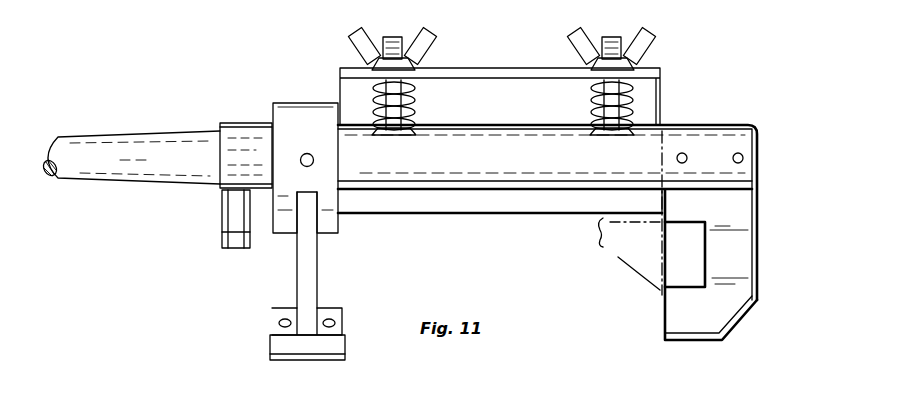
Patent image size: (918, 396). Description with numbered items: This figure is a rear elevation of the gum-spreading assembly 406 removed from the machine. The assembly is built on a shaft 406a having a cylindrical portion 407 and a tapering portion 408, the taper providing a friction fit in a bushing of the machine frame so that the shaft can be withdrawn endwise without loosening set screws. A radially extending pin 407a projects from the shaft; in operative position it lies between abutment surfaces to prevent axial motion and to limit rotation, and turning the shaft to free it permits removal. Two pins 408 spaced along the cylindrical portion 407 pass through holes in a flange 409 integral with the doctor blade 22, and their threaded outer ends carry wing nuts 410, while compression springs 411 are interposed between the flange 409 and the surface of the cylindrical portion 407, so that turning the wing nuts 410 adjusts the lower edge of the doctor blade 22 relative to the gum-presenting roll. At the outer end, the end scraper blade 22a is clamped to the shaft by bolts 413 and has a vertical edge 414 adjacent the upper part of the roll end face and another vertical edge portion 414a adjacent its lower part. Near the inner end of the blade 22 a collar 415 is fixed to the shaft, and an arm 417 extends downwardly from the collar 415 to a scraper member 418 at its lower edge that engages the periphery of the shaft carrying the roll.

The tapering portion / pins 408 is at (103, 143).
The gum-spreading assembly 406 is at (355, 12).
The shaft 406a is at (250, 121).
The collar 415 is at (315, 115).
The arm 417 is at (313, 279).
The scraper member 418 is at (343, 341).
The radially extending pin 407a is at (237, 250).
The flange 409 is at (535, 53).
The wing nuts 410 is at (430, 49).
The compression springs 411 is at (413, 115).
The doctor blade 22 is at (655, 100).
The bolts 413 is at (741, 152).
The cylindrical portion 407 is at (523, 178).
The vertical edge 414 is at (660, 221).
The vertical edge portion 414a is at (667, 317).
The scraper blade 22a is at (749, 224).